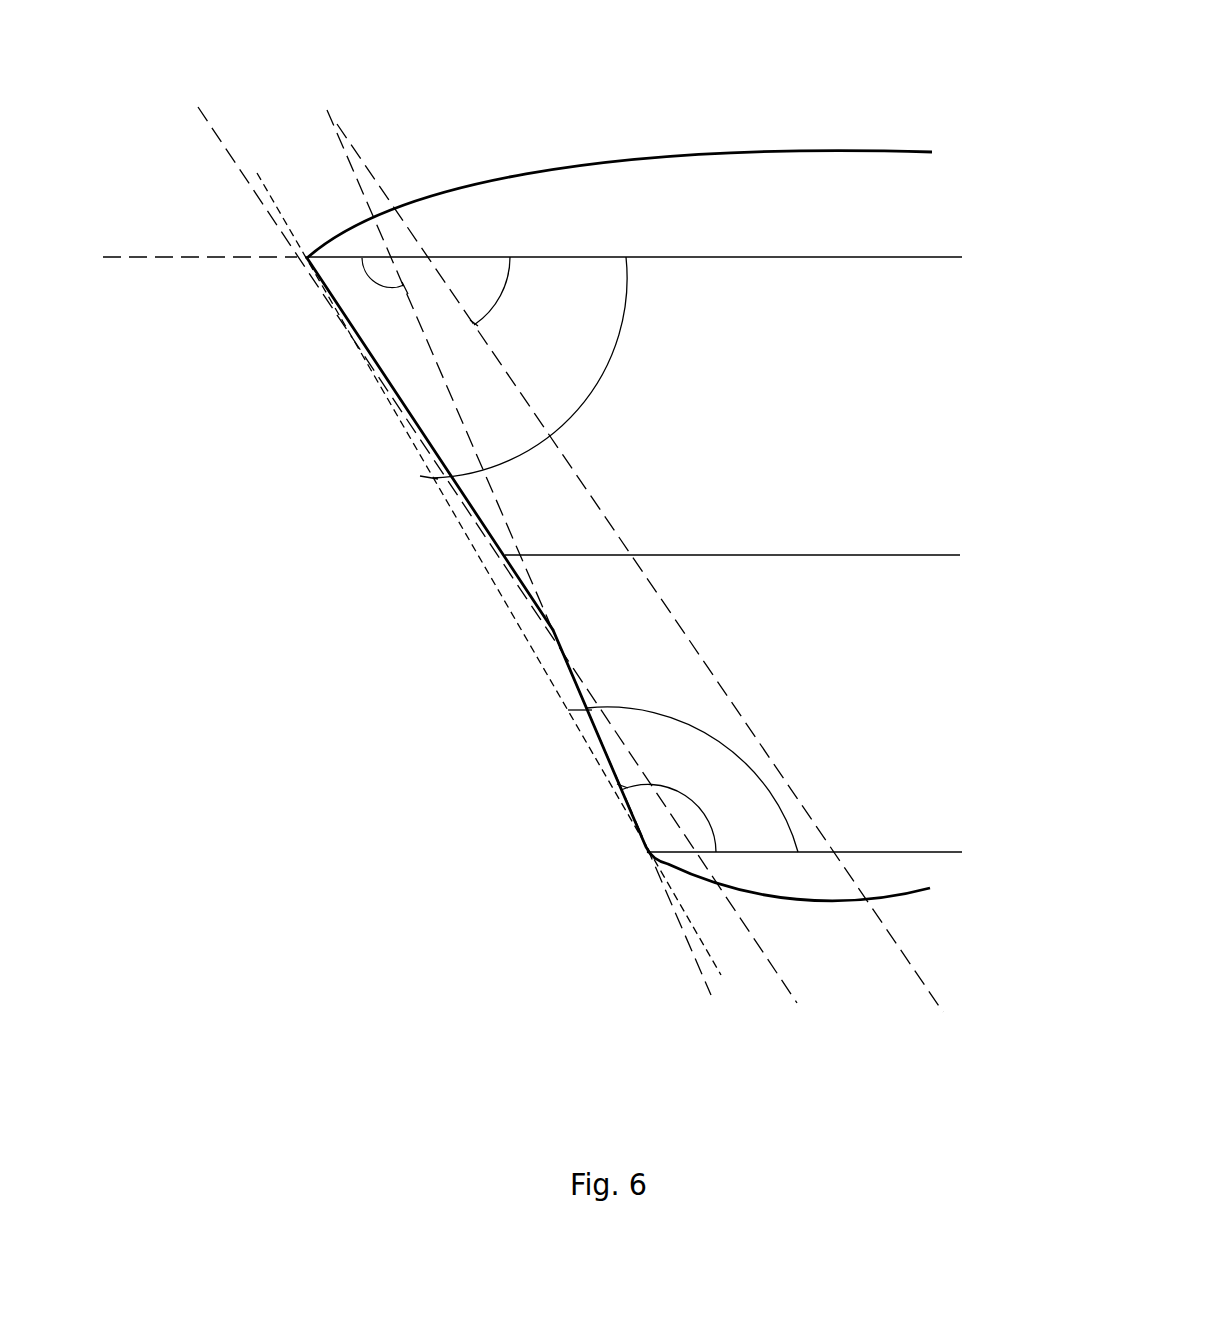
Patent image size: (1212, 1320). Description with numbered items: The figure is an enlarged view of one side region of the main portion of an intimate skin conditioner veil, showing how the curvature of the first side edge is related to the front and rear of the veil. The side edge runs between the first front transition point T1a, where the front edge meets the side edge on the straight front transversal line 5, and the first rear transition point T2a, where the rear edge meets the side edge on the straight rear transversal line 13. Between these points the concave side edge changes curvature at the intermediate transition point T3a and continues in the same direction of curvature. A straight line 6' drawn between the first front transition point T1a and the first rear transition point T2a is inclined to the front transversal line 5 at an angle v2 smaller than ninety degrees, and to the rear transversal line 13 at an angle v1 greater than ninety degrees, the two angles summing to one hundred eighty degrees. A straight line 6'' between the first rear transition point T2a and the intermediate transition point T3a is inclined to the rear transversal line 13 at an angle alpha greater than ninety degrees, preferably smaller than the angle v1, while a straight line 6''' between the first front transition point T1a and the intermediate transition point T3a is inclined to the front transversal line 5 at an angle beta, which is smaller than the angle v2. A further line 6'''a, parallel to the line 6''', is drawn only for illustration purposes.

The front transversal line 5 is at (610, 257).
The rear transversal line 13 is at (873, 851).
The straight line between front and rear transition points 6' is at (489, 574).
The straight line between rear transition point and intermediate transition point 6'' is at (483, 583).
The straight line between front transition point and intermediate transition point 6''' is at (472, 595).
The line parallel to line 6''' 6'''a is at (638, 520).
The first front transition point T1a is at (307, 258).
The first rear transition point T2a is at (648, 852).
The intermediate transition point T3a is at (553, 632).
The angle v1 is at (683, 757).
The angle v2 is at (536, 605).